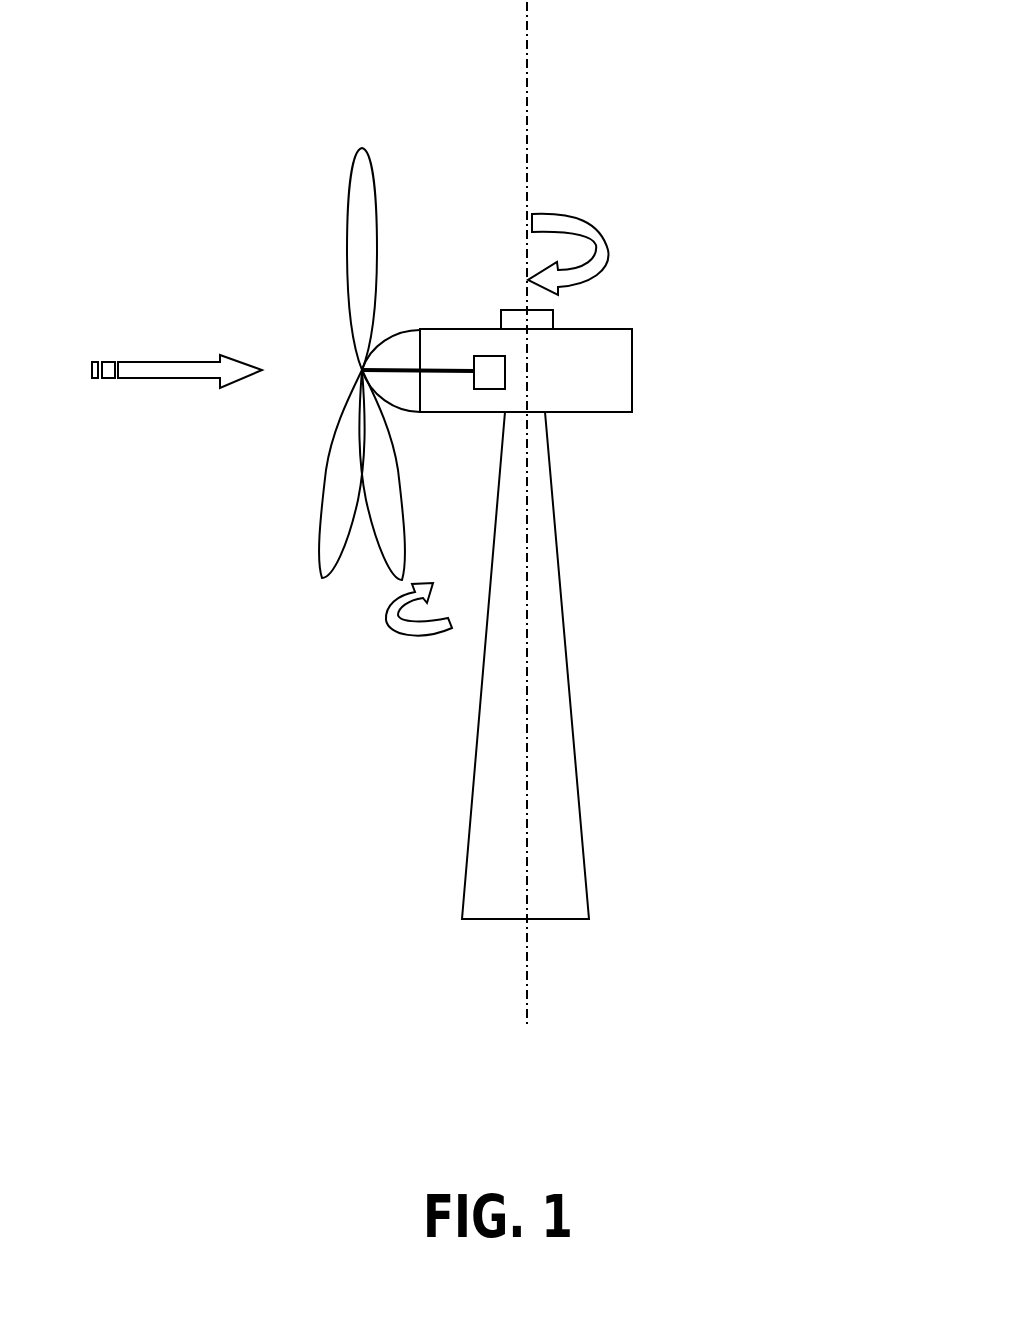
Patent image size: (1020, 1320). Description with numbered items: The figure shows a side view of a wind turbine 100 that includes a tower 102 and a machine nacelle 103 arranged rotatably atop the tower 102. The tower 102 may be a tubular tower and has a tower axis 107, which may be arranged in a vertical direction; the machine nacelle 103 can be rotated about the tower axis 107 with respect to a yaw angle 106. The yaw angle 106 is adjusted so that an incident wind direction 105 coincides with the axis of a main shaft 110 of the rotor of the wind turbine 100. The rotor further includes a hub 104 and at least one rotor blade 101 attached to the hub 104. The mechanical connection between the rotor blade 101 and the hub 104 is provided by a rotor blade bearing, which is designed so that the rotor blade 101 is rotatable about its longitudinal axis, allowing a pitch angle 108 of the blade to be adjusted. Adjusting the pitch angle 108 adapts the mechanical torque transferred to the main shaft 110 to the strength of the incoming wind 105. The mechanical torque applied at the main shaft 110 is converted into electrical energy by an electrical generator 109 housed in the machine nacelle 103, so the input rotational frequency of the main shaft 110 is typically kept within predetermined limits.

The wind turbine 100 is at (646, 114).
The rotor blade 101 is at (347, 278).
The tower 102 is at (573, 697).
The machine nacelle 103 is at (632, 373).
The hub 104 is at (413, 331).
The incident wind direction 105 is at (222, 383).
The yaw angle 106 is at (607, 250).
The tower axis 107 is at (523, 83).
The pitch angle 108 is at (390, 620).
The electrical generator 109 is at (490, 390).
The main shaft 110 is at (450, 376).